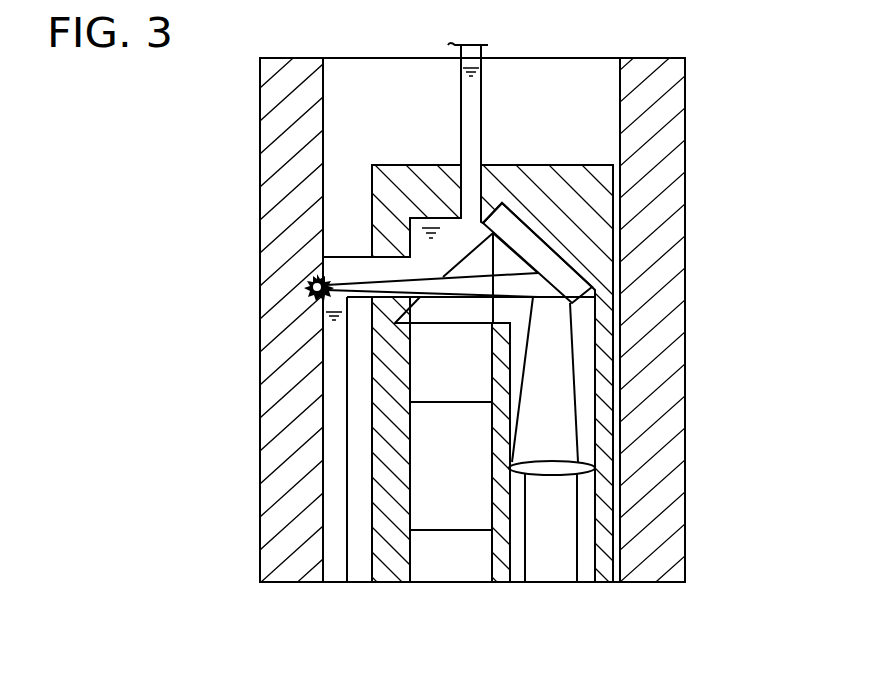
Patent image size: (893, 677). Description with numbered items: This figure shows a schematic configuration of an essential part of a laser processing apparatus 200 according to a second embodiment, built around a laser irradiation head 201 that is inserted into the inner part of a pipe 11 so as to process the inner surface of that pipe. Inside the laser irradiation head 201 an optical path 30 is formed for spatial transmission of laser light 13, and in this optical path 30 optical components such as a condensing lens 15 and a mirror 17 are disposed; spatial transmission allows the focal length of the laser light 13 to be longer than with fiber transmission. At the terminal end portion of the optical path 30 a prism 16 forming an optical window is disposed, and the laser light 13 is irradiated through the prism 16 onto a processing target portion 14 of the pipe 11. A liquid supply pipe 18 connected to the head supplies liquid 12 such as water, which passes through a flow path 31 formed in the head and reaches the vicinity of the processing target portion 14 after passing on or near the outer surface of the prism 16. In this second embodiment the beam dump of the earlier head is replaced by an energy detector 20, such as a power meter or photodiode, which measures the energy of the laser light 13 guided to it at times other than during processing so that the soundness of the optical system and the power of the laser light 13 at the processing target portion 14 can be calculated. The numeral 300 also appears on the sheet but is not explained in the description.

The laser processing apparatus 200 is at (532, 76).
The pipe 11 is at (668, 100).
The liquid 12 is at (335, 390).
The liquid supply pipe 18 is at (461, 96).
The flow path 31 is at (410, 218).
The laser irradiation head 201 is at (497, 175).
The optical path 30 is at (582, 340).
The mirror 17 is at (523, 233).
The prism 16 is at (468, 265).
The processing target portion 14 is at (303, 290).
The energy detector 20 is at (458, 512).
The condensing lens 15 is at (596, 462).
The laser light 13 is at (552, 565).
The assembly 300 is at (566, 670).